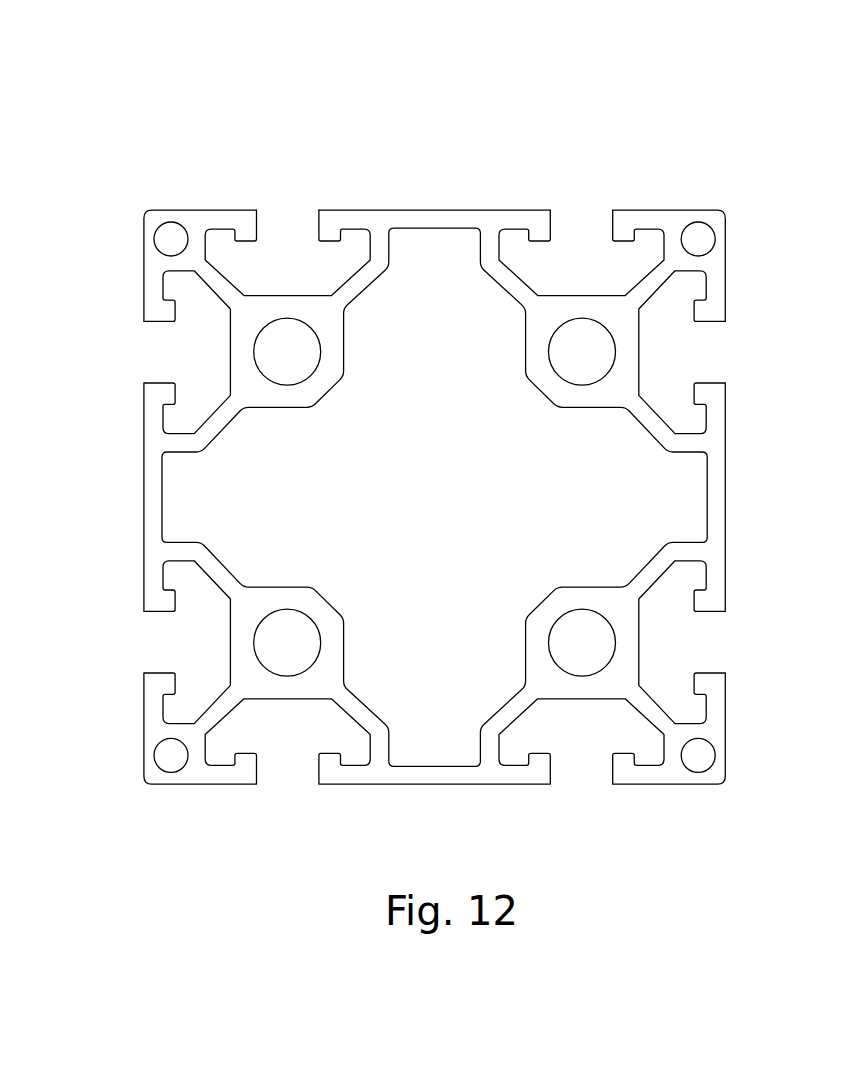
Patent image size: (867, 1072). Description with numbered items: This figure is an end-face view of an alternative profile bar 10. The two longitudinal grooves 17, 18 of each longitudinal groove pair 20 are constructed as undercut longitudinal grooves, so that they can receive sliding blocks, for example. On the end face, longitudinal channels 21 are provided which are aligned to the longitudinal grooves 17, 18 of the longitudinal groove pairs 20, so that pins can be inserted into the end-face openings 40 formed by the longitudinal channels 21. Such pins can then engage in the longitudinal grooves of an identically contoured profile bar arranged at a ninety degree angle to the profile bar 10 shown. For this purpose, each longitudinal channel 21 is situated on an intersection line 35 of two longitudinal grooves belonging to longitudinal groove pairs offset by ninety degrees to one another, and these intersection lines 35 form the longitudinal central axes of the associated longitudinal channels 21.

The profile bar 10 is at (396, 171).
The longitudinal groove 17 is at (275, 260).
The longitudinal groove 18 is at (558, 225).
The longitudinal groove pair 20 is at (373, 78).
The longitudinal channel 21 is at (581, 352).
The intersection line 35 is at (260, 378).
The end-face opening 40 is at (253, 605).